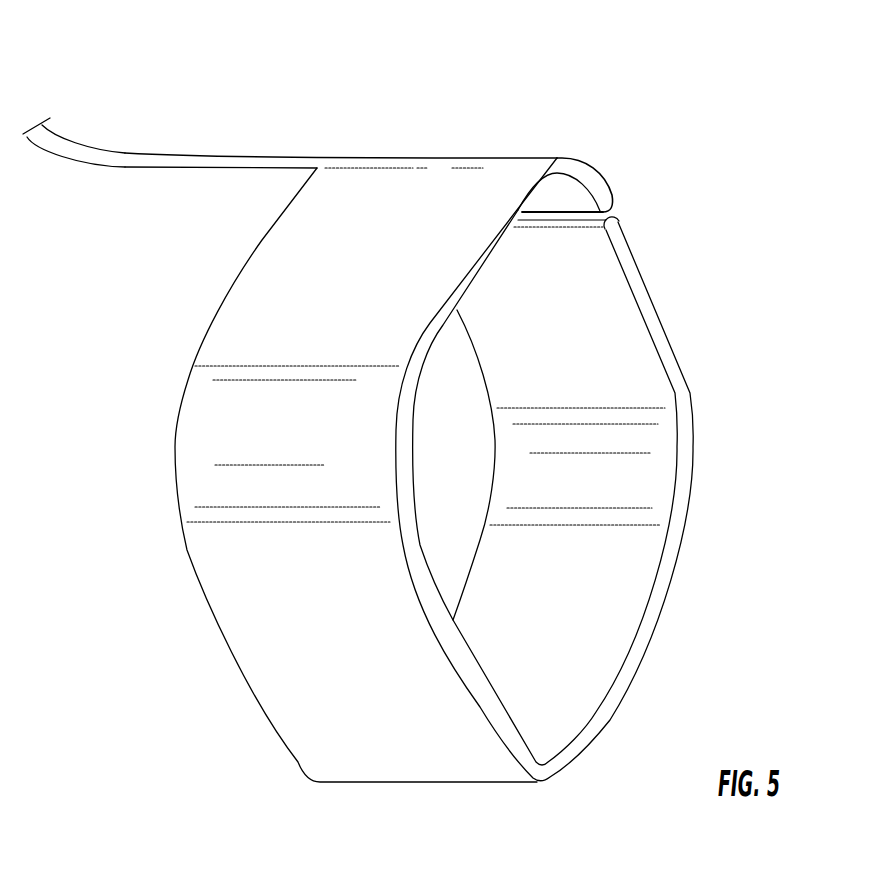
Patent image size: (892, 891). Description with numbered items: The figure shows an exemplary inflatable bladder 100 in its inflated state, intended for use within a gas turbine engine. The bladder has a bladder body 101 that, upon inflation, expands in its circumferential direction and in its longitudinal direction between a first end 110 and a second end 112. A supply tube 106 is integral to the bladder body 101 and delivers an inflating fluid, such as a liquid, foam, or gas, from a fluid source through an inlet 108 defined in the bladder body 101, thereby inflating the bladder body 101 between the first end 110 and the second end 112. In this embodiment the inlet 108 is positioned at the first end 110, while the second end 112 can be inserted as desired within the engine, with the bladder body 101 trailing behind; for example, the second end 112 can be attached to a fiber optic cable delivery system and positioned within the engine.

The inflatable bladder 100 is at (752, 232).
The bladder body 101 is at (231, 442).
The supply tube 106 is at (158, 160).
The inlet 108 is at (312, 158).
The first end 110 is at (565, 207).
The second end 112 is at (583, 228).